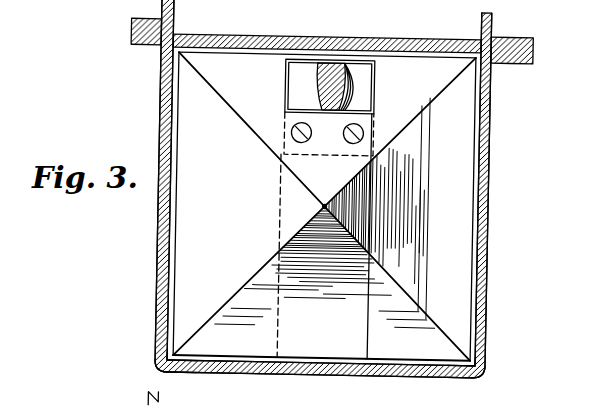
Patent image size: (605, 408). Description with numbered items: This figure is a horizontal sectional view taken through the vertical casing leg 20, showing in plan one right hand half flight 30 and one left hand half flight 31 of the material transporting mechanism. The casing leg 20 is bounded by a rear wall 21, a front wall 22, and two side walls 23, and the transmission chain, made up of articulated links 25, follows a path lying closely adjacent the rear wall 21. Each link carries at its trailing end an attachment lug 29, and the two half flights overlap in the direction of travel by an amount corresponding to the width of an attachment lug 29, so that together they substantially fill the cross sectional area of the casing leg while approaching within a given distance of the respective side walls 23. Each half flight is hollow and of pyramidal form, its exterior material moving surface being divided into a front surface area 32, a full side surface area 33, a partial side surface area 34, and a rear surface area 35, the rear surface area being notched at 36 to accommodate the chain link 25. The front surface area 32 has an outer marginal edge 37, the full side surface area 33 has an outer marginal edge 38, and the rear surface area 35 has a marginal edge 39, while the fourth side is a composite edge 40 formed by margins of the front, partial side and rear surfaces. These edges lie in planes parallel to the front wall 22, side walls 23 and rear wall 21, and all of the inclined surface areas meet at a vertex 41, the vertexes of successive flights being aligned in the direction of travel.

The vertical casing leg 20 is at (156, 366).
The rear wall 21 is at (312, 38).
The front wall 22 is at (345, 376).
The side walls 23 is at (159, 198).
The articulated link 25 is at (333, 62).
The attachment lug 29 is at (333, 157).
The right hand half flight 30 is at (488, 370).
The left hand half flight 31 is at (160, 350).
The front surface area 32 is at (322, 340).
The full side surface area 33 is at (324, 205).
The partial side surface area 34 is at (363, 212).
The rear surface area 35 is at (324, 206).
The notch 36 is at (287, 66).
The outer marginal edge of front surface area 37 is at (253, 360).
The outer marginal edge of side surface area 38 is at (175, 255).
The marginal edge of rear surface area 39 is at (222, 54).
The composite edge 40 is at (279, 199).
The vertex 41 is at (322, 208).